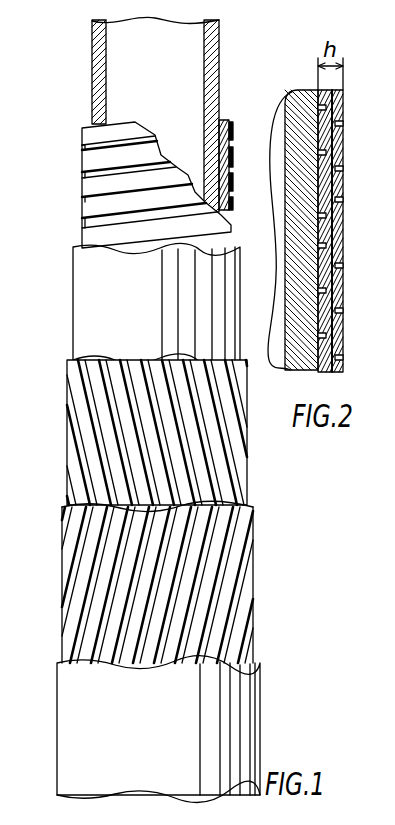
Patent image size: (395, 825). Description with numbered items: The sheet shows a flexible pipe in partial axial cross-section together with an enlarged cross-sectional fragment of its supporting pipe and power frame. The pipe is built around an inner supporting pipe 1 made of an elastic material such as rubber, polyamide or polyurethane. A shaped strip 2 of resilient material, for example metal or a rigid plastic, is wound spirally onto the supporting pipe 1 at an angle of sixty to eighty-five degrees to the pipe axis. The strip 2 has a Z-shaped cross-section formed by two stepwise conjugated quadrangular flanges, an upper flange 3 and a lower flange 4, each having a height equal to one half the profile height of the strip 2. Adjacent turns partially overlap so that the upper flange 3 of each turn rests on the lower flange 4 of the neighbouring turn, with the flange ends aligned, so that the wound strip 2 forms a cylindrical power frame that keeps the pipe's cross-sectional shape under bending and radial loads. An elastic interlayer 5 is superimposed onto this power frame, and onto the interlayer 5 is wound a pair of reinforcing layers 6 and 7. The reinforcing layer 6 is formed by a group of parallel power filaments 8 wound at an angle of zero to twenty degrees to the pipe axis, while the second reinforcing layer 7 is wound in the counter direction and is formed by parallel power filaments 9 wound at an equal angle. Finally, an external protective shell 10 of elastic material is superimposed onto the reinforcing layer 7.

In FIG. 1, the inner supporting pipe 1 is at (96, 82).
In FIG. 2, the inner supporting pipe 1 is at (293, 240).
In FIG. 1, the shaped strip 2 is at (84, 185).
In FIG. 2, the shaped strip 2 is at (352, 231).
In FIG. 1, the upper flange 3 is at (232, 140).
In FIG. 2, the upper flange 3 is at (337, 152).
In FIG. 1, the lower flange 4 is at (224, 122).
In FIG. 2, the lower flange 4 is at (336, 138).
In FIG. 1, the interlayer 5 is at (75, 290).
In FIG. 1, the reinforcing layer 6 is at (158, 432).
In FIG. 1, the second reinforcing layer 7 is at (138, 582).
In FIG. 1, the power filaments 8 is at (72, 432).
In FIG. 1, the power filaments 9 is at (73, 637).
In FIG. 1, the external protective shell 10 is at (65, 712).